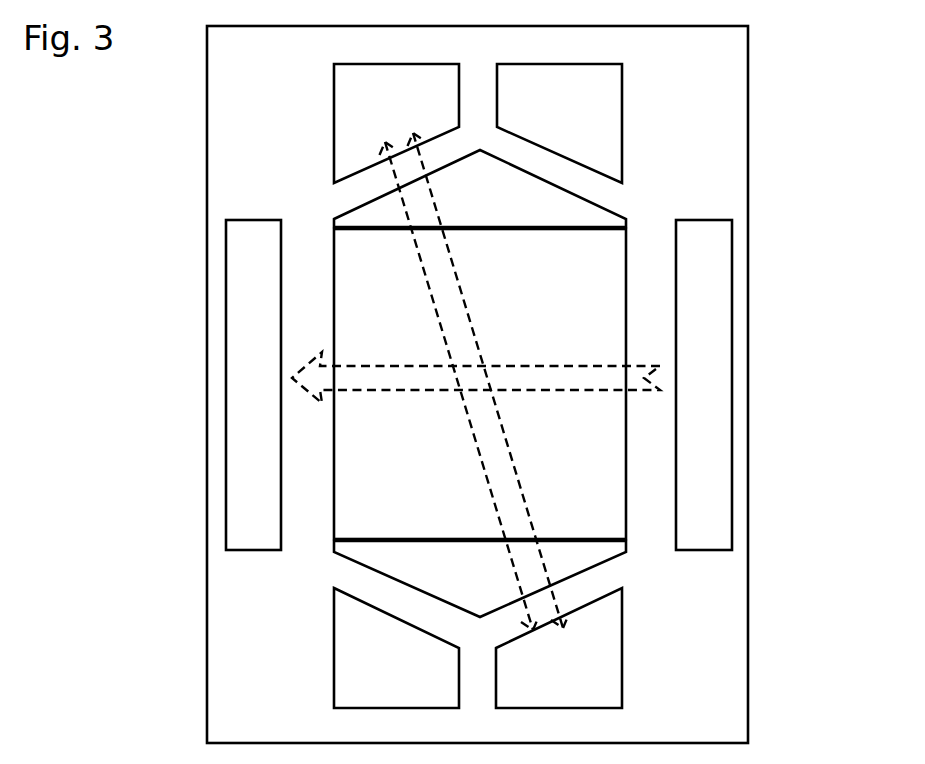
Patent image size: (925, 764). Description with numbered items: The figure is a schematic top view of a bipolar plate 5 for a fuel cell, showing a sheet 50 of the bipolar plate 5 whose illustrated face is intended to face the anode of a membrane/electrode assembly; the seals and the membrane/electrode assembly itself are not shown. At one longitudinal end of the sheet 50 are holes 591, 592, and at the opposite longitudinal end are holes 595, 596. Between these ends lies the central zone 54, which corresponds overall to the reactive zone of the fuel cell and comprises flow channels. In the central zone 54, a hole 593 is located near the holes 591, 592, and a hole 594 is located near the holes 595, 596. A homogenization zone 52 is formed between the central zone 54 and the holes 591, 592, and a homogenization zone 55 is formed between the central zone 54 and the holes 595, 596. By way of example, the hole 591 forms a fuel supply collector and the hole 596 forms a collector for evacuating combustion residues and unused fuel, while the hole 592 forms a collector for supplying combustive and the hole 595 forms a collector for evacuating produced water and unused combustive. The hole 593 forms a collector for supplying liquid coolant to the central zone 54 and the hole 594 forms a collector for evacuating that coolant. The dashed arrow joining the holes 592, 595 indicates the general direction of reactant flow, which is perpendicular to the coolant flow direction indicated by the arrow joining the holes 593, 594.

The bipolar plate 5 is at (754, 728).
The sheet 50 is at (726, 586).
The homogenization zone 52 is at (461, 202).
The central zone 54 is at (535, 324).
The homogenization zone 55 is at (461, 581).
The hole 591 is at (533, 109).
The hole 592 is at (364, 108).
The hole 593 is at (681, 381).
The hole 594 is at (228, 382).
The hole 595 is at (534, 673).
The hole 596 is at (365, 673).